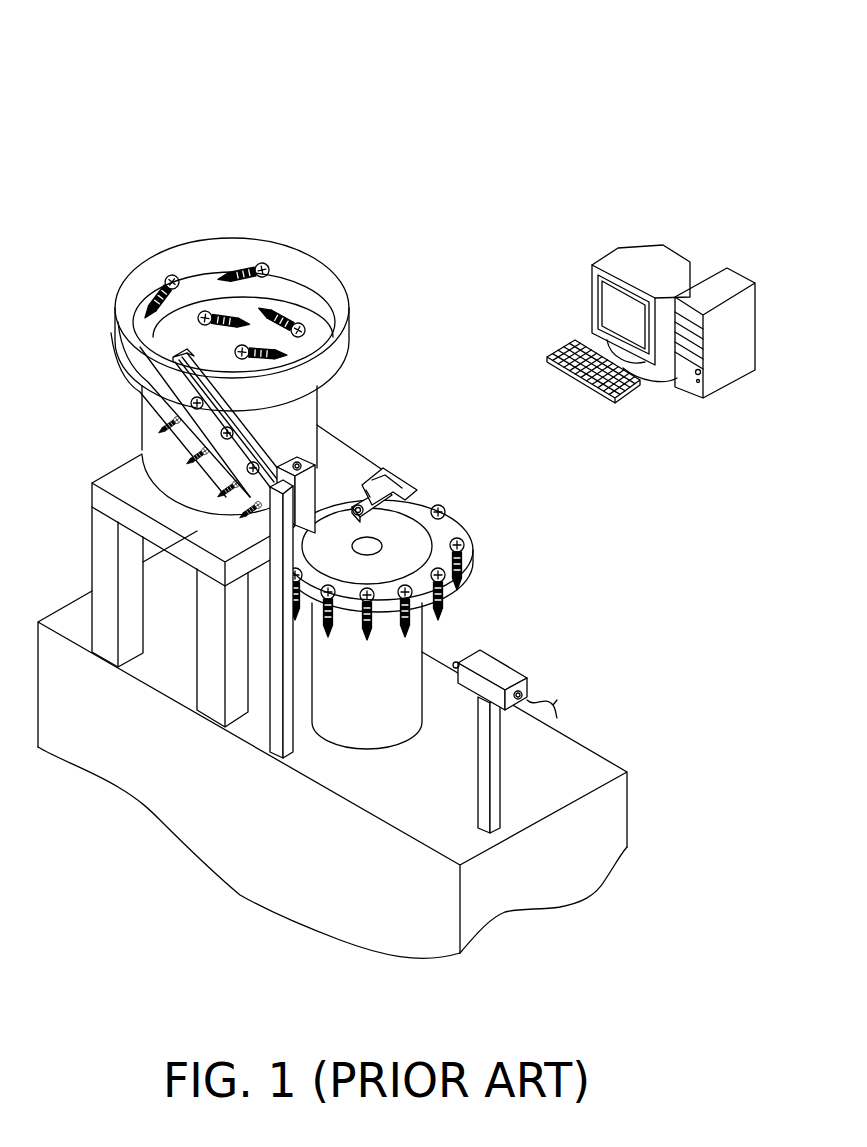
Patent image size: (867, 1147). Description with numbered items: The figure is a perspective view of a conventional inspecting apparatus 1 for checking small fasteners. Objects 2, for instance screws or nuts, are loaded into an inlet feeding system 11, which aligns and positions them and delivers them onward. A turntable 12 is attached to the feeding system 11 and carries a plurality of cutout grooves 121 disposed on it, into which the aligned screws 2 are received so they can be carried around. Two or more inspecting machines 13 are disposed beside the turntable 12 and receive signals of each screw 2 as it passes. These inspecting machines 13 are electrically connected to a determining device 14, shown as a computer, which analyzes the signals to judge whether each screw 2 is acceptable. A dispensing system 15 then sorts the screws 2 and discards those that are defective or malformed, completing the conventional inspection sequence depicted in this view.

The inspecting apparatus 1 is at (98, 99).
The objects 2 is at (152, 280).
The inlet feeding system 11 is at (207, 238).
The turntable 12 is at (460, 522).
The inspecting machines 13 is at (306, 470).
The determining device 14 is at (711, 270).
The dispensing system 15 is at (412, 482).
The cutout grooves 121 is at (348, 486).